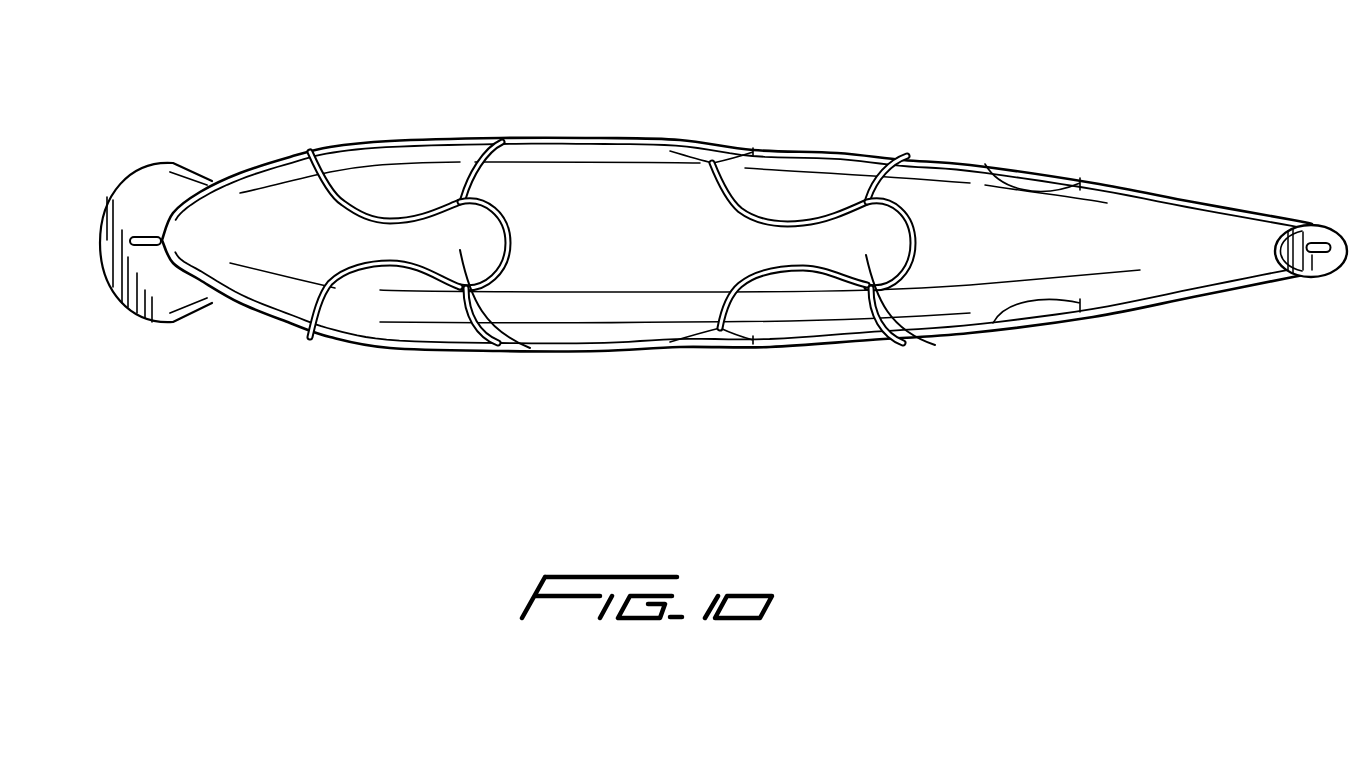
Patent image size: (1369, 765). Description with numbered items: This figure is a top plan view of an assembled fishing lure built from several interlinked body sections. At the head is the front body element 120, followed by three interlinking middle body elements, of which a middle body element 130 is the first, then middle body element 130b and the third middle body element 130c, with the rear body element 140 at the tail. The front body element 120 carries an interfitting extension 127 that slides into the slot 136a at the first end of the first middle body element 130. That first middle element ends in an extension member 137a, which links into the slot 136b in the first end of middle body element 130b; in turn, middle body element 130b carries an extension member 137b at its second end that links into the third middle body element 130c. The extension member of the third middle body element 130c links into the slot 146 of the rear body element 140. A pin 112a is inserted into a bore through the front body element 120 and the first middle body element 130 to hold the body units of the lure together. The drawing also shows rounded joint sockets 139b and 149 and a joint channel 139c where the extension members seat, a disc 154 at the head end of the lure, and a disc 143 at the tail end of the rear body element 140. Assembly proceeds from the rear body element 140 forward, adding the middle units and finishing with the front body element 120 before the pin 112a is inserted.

The front body element 120 is at (263, 172).
The middle body element 130 is at (365, 157).
The middle body element 130b is at (643, 183).
The third middle body element 130c is at (800, 163).
The slot 136a is at (468, 200).
The slot 136b is at (838, 207).
The joint socket 139b is at (508, 233).
The joint channel 139c is at (759, 336).
The joint socket 149 is at (913, 230).
The slot 146 is at (1030, 187).
The rear body element 140 is at (1210, 223).
The tail end disc 143 is at (1315, 230).
The head end disc 154 is at (150, 297).
The pin 112a is at (390, 351).
The interfitting extension 127 is at (477, 292).
The extension member 137a is at (690, 344).
The extension member 137b is at (891, 300).